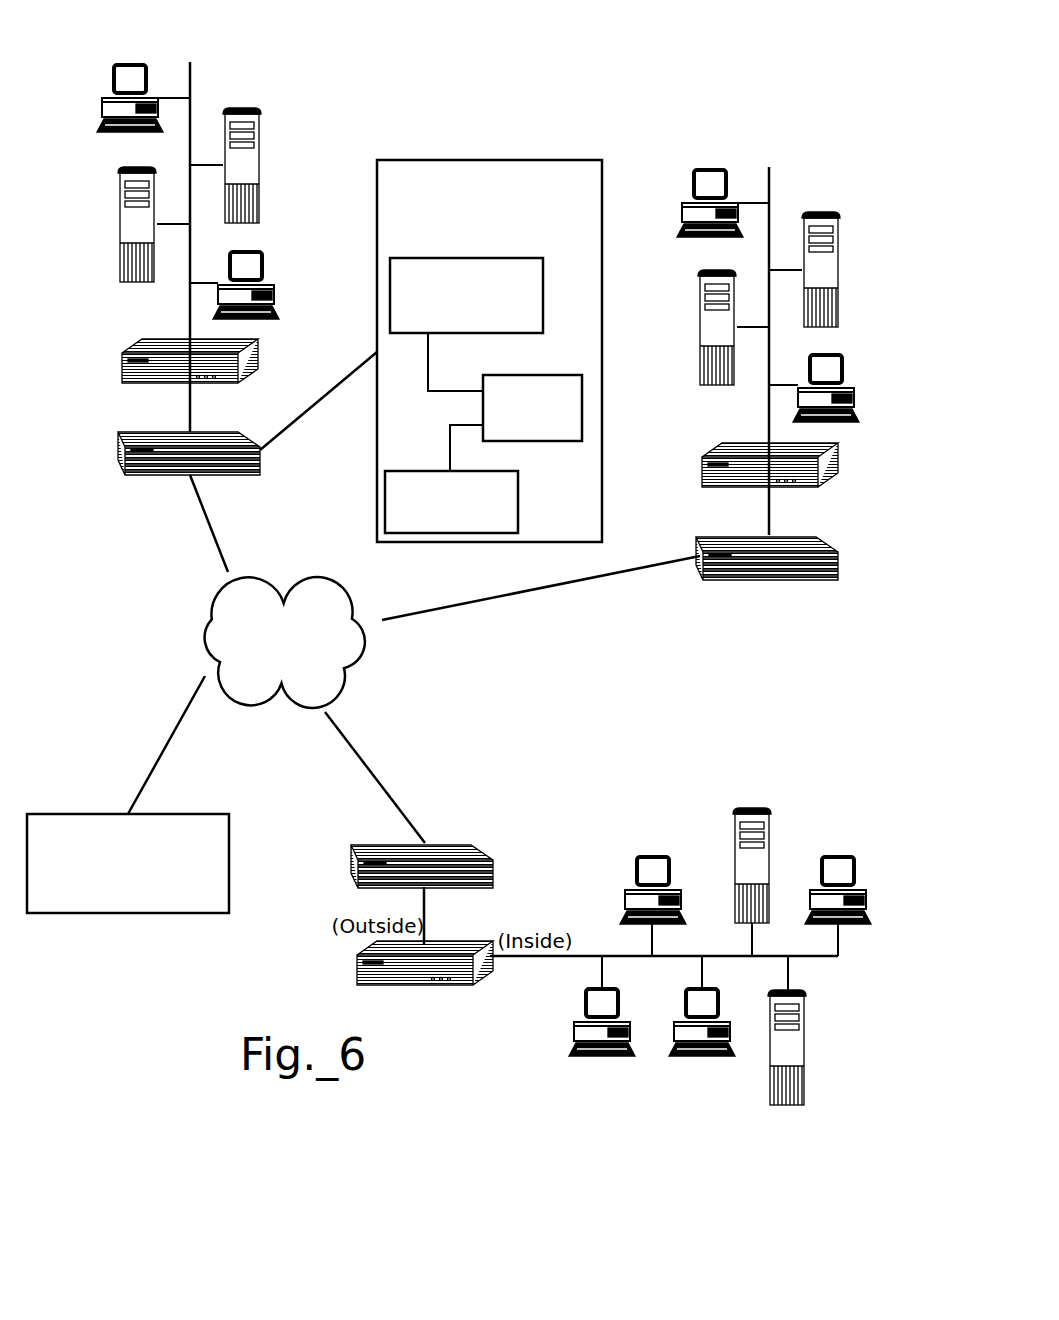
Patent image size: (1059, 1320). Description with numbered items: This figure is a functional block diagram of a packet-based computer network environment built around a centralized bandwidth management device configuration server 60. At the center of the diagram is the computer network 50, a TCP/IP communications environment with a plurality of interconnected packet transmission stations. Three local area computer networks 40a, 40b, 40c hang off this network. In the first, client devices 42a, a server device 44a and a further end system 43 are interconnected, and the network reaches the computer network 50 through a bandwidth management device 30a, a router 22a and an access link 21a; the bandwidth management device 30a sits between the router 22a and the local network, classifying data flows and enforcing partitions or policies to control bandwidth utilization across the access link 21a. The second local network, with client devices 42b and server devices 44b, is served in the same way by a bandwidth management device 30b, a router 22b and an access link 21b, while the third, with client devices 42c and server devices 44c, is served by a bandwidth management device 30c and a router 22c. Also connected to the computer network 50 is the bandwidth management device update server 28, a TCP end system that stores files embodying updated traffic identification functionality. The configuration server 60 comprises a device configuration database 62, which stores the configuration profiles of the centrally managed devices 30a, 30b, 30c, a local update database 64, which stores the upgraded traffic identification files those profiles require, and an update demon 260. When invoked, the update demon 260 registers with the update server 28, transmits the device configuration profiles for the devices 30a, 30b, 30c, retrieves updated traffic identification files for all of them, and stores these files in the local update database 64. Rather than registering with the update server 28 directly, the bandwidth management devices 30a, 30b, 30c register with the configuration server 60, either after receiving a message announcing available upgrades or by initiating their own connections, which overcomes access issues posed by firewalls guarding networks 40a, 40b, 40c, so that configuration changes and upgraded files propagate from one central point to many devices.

The local area computer network 40c is at (206, 74).
The client device 42c is at (100, 107).
The server device 44c is at (260, 193).
The bandwidth management device 30c is at (222, 384).
The router 22c is at (225, 477).
The bandwidth management device configuration server 60 is at (432, 160).
The device configuration database 62 is at (543, 297).
The update demon 260 is at (582, 405).
The local update database 64 is at (450, 533).
The computer network 50 is at (175, 615).
The bandwidth management device update server 28 is at (78, 814).
The access link 21a is at (413, 835).
The router 22a is at (460, 843).
The local area computer network 40a is at (576, 892).
The bandwidth management device 30a is at (455, 987).
The client device 42a is at (652, 853).
The server 43 is at (733, 866).
The server device 44a is at (787, 1105).
The local area computer network 40b is at (783, 177).
The client device 42b is at (682, 211).
The server device 44b is at (840, 300).
The bandwidth management device 30b is at (800, 487).
The router 22b is at (805, 578).
The access link 21b is at (545, 586).